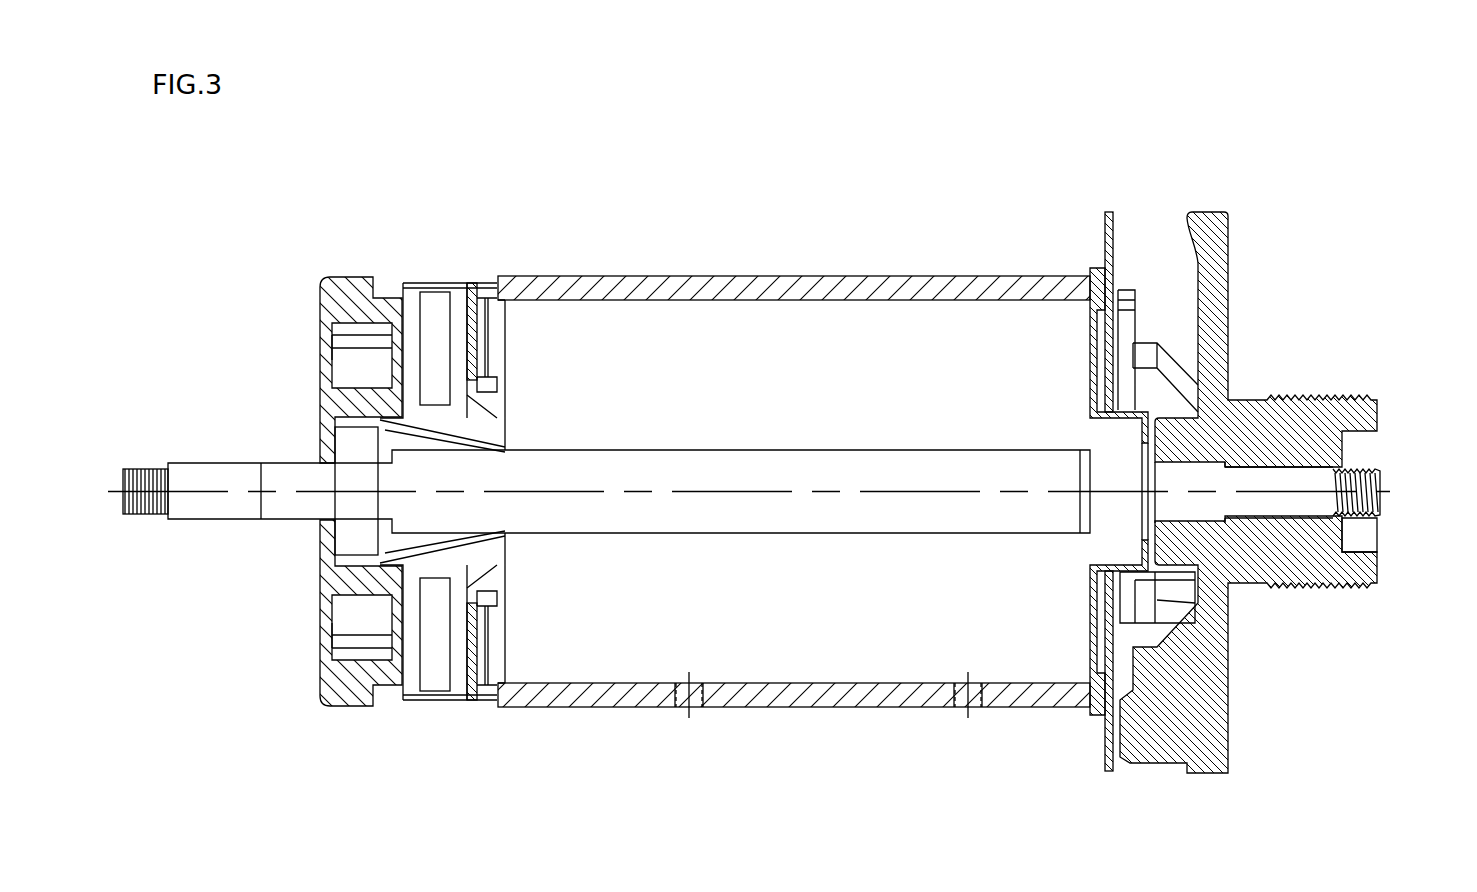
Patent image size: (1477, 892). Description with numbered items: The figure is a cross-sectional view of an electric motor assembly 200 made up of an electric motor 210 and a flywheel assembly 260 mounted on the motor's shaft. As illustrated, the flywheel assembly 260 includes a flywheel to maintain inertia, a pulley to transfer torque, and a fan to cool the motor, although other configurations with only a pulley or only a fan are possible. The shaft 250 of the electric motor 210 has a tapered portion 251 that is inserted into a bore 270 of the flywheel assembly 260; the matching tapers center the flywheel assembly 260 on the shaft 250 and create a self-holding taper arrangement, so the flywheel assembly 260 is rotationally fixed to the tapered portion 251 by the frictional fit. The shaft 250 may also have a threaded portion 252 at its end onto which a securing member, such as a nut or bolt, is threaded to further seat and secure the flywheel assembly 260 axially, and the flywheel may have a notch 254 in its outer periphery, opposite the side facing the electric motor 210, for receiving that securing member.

The electric motor assembly 200 is at (1020, 143).
The electric motor 210 is at (778, 255).
The shaft 250 is at (1248, 510).
The tapered portion 251 is at (1202, 472).
The threaded portion 252 is at (1355, 483).
The notch 254 is at (1358, 534).
The flywheel assembly 260 is at (1213, 275).
The bore 270 is at (1183, 538).